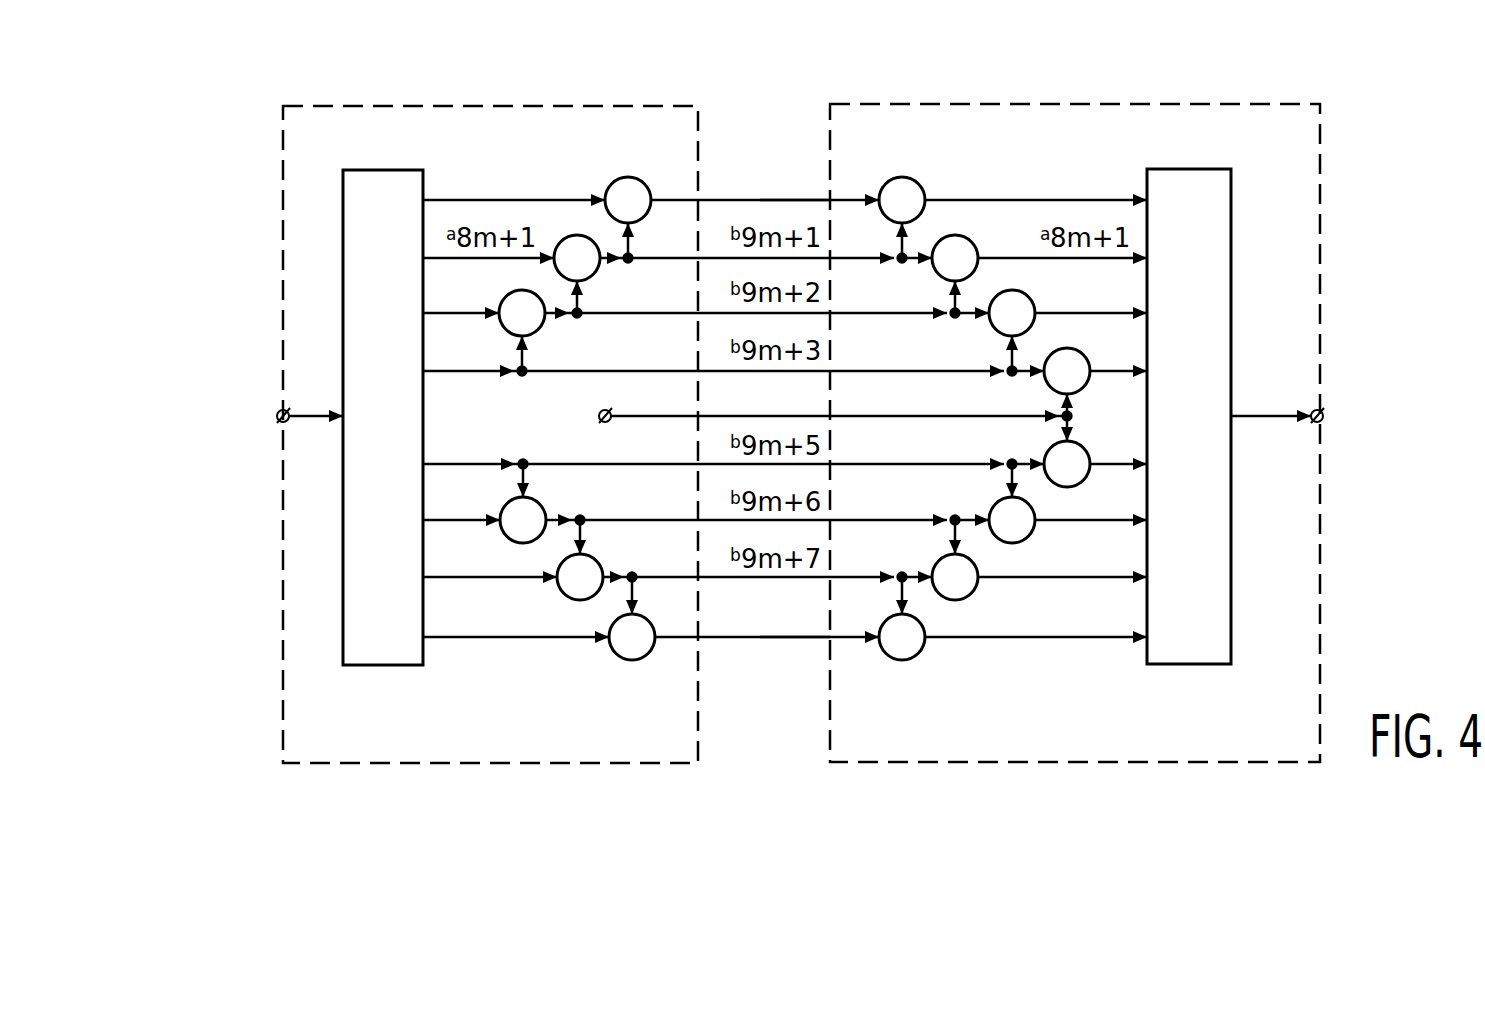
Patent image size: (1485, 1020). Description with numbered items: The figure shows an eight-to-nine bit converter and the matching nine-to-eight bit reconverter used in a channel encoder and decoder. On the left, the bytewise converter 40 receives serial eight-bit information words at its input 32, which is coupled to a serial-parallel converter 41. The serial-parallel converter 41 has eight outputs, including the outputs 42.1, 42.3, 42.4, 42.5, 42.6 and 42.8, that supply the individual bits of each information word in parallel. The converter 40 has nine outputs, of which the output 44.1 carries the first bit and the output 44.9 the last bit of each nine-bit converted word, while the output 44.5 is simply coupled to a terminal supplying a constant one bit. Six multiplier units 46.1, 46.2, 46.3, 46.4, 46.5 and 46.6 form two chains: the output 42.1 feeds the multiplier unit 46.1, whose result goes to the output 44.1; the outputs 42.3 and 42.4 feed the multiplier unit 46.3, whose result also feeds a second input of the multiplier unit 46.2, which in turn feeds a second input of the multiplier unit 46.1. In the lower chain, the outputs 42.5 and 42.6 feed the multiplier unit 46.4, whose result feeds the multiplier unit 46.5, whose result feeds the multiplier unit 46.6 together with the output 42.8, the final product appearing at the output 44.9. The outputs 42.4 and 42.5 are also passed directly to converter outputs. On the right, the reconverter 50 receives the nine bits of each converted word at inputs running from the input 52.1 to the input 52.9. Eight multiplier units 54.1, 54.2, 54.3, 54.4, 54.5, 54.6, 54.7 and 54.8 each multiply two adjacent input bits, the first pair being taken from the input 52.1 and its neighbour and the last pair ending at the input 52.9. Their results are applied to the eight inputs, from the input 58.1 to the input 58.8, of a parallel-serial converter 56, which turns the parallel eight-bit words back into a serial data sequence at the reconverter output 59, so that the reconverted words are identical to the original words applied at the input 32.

The bytewise converter 40 is at (238, 145).
The reconverter 50 is at (1240, 103).
The serial-parallel converter 41 is at (388, 652).
The parallel-serial converter 56 is at (1218, 225).
The input 32 is at (277, 416).
The output terminal for data bits a_k 59 is at (1325, 423).
The output of the serial-parallel converter 42.1 is at (428, 198).
The output of the serial-parallel converter 42.3 is at (428, 315).
The output of the serial-parallel converter 42.4 is at (428, 373).
The output of the serial-parallel converter 42.5 is at (428, 463).
The output of the serial-parallel converter 42.6 is at (428, 519).
The output of the serial-parallel converter 42.8 is at (428, 640).
The output of the converter 44.1 is at (700, 198).
The output of the converter 44.5 is at (698, 416).
The output of the converter 44.9 is at (702, 644).
The multiplier unit 46.1 is at (630, 178).
The multiplier unit 46.2 is at (577, 236).
The multiplier unit 46.3 is at (507, 298).
The multiplier unit 46.4 is at (506, 535).
The multiplier unit 46.5 is at (577, 600).
The multiplier unit 46.6 is at (632, 660).
The input of the reconverter 52.1 is at (828, 198).
The input of the reconverter 52.9 is at (828, 640).
The multiplier unit 54.1 is at (897, 179).
The multiplier unit 54.2 is at (955, 236).
The multiplier unit 54.3 is at (1005, 291).
The multiplier unit 54.4 is at (1080, 389).
The multiplier unit 54.5 is at (1070, 488).
The multiplier unit 54.6 is at (1012, 544).
The multiplier unit 54.7 is at (958, 601).
The multiplier unit 54.8 is at (904, 661).
The input of the parallel-serial converter 58.1 is at (1143, 194).
The input of the parallel-serial converter 58.8 is at (1145, 645).